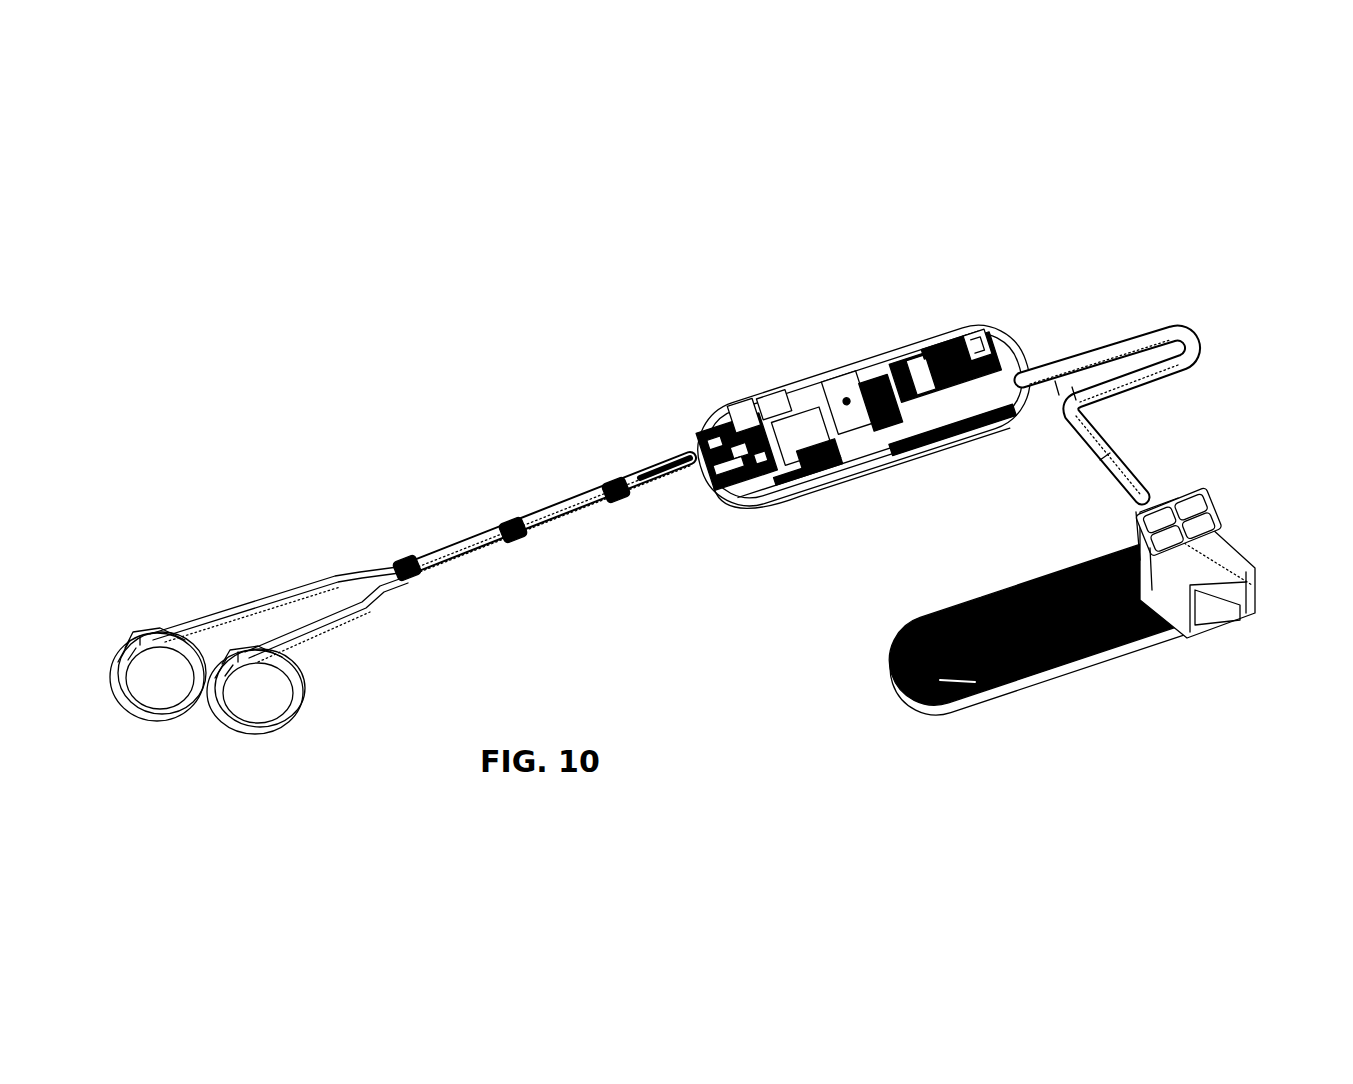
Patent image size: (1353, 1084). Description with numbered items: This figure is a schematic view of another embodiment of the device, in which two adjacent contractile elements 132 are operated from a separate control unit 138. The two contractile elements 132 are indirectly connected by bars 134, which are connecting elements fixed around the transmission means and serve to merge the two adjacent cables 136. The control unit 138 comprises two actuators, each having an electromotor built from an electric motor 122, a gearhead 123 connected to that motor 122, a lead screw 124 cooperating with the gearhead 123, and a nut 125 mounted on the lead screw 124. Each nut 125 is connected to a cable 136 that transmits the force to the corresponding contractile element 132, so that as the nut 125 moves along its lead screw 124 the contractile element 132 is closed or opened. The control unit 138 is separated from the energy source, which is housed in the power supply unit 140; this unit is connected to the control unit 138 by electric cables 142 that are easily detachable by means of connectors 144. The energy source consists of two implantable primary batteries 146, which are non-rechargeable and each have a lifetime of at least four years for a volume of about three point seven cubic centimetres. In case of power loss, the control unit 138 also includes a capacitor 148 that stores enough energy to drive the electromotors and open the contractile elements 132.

The electric motor 122 is at (975, 335).
The gearhead 123 is at (912, 362).
The lead screw 124 is at (742, 408).
The nut 125 is at (770, 400).
The contractile element 132 is at (237, 655).
The bar 134 is at (615, 483).
The cable 136 is at (643, 473).
The control unit 138 is at (796, 532).
The power supply unit 140 is at (938, 589).
The electric cable 142 is at (1108, 467).
The connector 144 is at (1205, 515).
The primary battery 146 is at (1033, 563).
The capacitor 148 is at (722, 500).